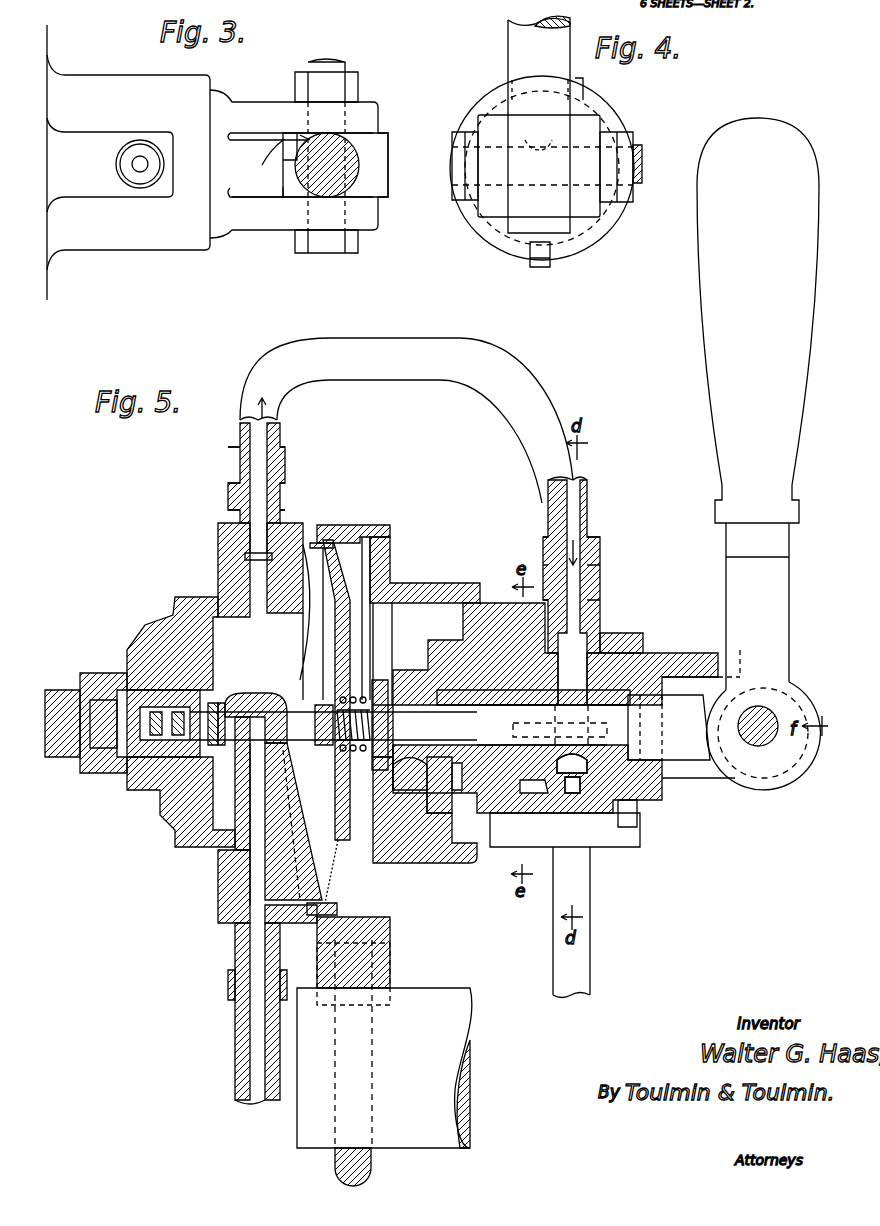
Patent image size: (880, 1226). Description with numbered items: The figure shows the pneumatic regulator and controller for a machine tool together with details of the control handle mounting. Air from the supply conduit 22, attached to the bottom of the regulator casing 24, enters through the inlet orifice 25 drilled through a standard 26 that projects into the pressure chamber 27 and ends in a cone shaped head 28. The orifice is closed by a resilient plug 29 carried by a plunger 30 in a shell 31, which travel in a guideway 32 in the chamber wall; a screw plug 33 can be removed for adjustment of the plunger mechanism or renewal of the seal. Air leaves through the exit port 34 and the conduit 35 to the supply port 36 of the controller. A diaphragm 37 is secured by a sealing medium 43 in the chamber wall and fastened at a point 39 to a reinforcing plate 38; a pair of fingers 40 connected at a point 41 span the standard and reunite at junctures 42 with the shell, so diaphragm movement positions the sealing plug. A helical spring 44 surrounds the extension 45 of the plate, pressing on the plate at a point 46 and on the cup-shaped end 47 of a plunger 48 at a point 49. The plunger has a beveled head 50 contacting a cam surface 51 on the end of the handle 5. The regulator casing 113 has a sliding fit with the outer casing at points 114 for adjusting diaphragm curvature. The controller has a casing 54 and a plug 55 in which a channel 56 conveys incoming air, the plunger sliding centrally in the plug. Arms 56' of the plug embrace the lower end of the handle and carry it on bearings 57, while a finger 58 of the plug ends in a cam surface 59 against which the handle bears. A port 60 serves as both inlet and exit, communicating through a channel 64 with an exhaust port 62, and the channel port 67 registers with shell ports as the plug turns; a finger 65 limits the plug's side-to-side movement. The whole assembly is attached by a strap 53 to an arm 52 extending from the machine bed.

In FIG. 3, the handle 5 is at (350, 158).
In FIG. 4, the handle 5 is at (539, 124).
In FIG. 5, the handle 5 is at (780, 583).
In FIG. 5, the conduit 22 is at (238, 1049).
In FIG. 5, the regulator casing 24 is at (226, 868).
In FIG. 5, the inlet orifice 25 is at (275, 840).
In FIG. 5, the standard 26 is at (292, 757).
In FIG. 5, the pressure chamber 27 is at (295, 588).
In FIG. 5, the cone shaped head 28 is at (268, 693).
In FIG. 5, the plug 29 is at (221, 702).
In FIG. 5, the plunger 30 is at (180, 695).
In FIG. 5, the shell 31 is at (188, 752).
In FIG. 5, the guideway 32 is at (175, 775).
In FIG. 5, the screw plug 33 is at (57, 690).
In FIG. 5, the exit port 34 is at (258, 593).
In FIG. 5, the conduit 35 is at (265, 432).
In FIG. 3, the supply port 36 is at (134, 165).
In FIG. 5, the supply port 36 is at (576, 594).
In FIG. 5, the diaphragm 37 is at (337, 580).
In FIG. 5, the reinforcing plate 38 is at (350, 628).
In FIG. 5, the securing point 39 is at (328, 710).
In FIG. 5, the fingers 40 is at (293, 712).
In FIG. 5, the connection 41 is at (312, 741).
In FIG. 5, the juncture 42 is at (210, 702).
In FIG. 5, the sealing medium 43 is at (333, 543).
In FIG. 5, the helical spring 44 is at (352, 698).
In FIG. 5, the extension 45 is at (378, 700).
In FIG. 5, the pressing point 46 is at (372, 645).
In FIG. 5, the cup-shaped end 47 is at (388, 766).
In FIG. 5, the plunger 48 is at (420, 796).
In FIG. 5, the pressing point 49 is at (380, 762).
In FIG. 5, the beveled head 50 is at (688, 738).
In FIG. 3, the cam surface 51 is at (375, 181).
In FIG. 4, the cam surface 51 is at (520, 218).
In FIG. 5, the cam surface 51 is at (797, 777).
In FIG. 5, the arm 52 is at (453, 996).
In FIG. 5, the strap 53 is at (371, 1150).
In FIG. 3, the casing 54 is at (115, 86).
In FIG. 4, the casing 54 is at (615, 121).
In FIG. 5, the casing 54 is at (605, 640).
In FIG. 3, the plug 55 is at (225, 225).
In FIG. 4, the plug 55 is at (505, 112).
In FIG. 5, the plug 55 is at (650, 660).
In FIG. 5, the channel 56 is at (637, 624).
In FIG. 3, the arms 56' is at (325, 161).
In FIG. 4, the arms 56' is at (540, 131).
In FIG. 5, the arms 56' is at (698, 793).
In FIG. 3, the bearings 57 is at (358, 100).
In FIG. 4, the bearings 57 is at (547, 160).
In FIG. 5, the bearings 57 is at (757, 749).
In FIG. 3, the finger 58 is at (298, 128).
In FIG. 4, the finger 58 is at (578, 81).
In FIG. 5, the finger 58 is at (690, 652).
In FIG. 3, the cam surface 59 is at (310, 135).
In FIG. 4, the cam surface 59 is at (585, 88).
In FIG. 5, the cam surface 59 is at (726, 652).
In FIG. 5, the port 60 is at (564, 796).
In FIG. 5, the exhaust port 62 is at (530, 796).
In FIG. 5, the channel 64 is at (513, 731).
In FIG. 4, the finger 65 is at (532, 268).
In FIG. 5, the finger 65 is at (632, 826).
In FIG. 5, the port 67 is at (584, 796).
In FIG. 5, the regulator casing 113 is at (236, 552).
In FIG. 5, the sliding fit 114 is at (367, 534).